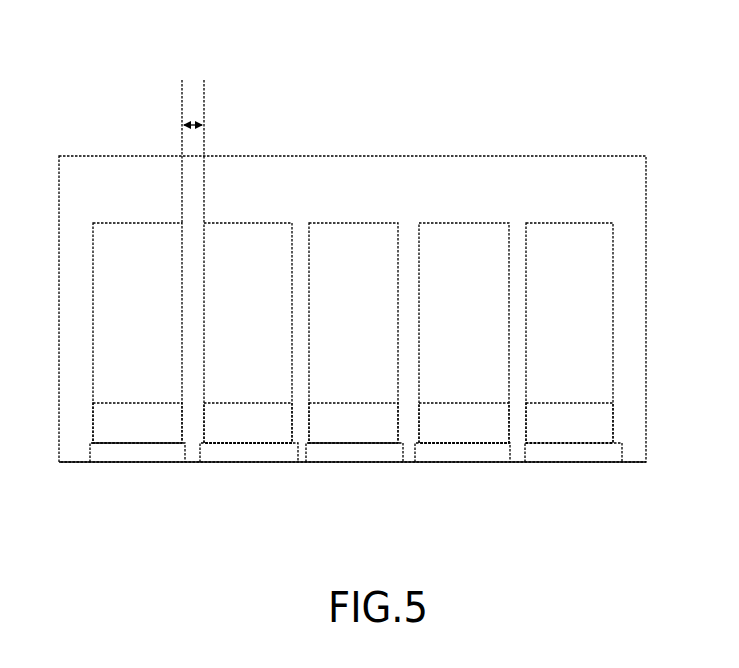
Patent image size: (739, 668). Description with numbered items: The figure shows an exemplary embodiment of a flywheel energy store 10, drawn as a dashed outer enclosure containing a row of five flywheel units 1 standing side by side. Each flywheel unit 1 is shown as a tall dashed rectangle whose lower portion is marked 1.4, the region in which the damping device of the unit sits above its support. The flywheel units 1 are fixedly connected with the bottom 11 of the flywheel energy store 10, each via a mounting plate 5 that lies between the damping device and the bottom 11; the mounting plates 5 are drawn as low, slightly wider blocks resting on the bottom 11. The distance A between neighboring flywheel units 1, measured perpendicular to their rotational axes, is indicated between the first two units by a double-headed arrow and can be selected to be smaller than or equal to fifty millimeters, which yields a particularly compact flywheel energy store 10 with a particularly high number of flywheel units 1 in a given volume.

The flywheel unit 1 is at (353, 333).
The cell section / connection portion 1.4 is at (353, 423).
The mounting plate 5 is at (137, 456).
The flywheel energy store 10 is at (596, 121).
The bottom 11 is at (71, 470).
The distance A is at (192, 104).